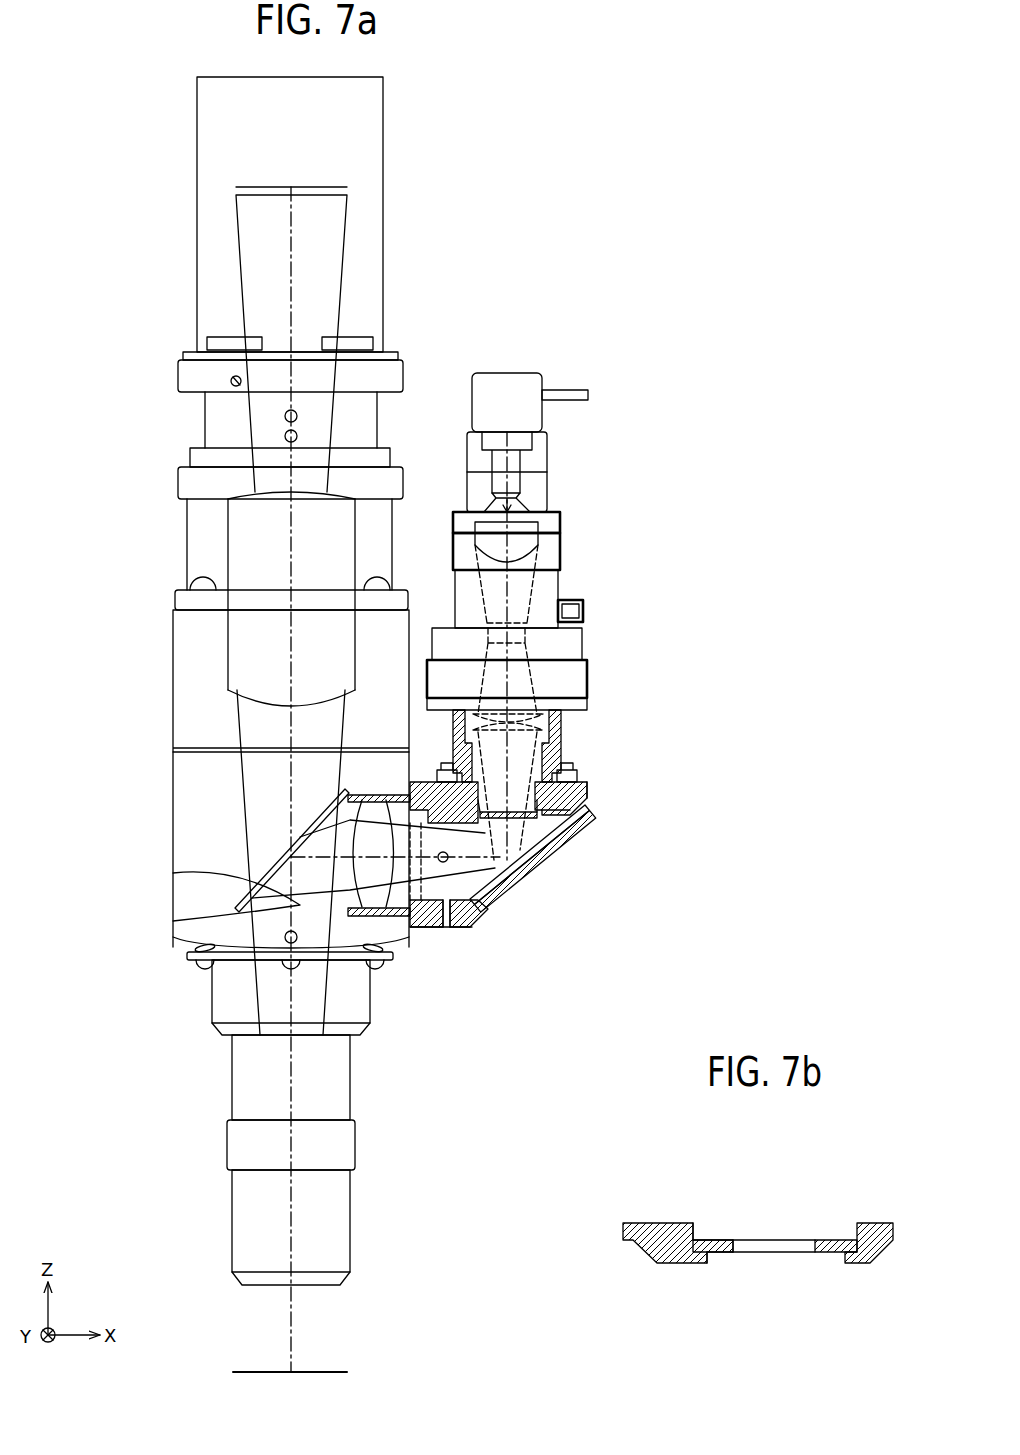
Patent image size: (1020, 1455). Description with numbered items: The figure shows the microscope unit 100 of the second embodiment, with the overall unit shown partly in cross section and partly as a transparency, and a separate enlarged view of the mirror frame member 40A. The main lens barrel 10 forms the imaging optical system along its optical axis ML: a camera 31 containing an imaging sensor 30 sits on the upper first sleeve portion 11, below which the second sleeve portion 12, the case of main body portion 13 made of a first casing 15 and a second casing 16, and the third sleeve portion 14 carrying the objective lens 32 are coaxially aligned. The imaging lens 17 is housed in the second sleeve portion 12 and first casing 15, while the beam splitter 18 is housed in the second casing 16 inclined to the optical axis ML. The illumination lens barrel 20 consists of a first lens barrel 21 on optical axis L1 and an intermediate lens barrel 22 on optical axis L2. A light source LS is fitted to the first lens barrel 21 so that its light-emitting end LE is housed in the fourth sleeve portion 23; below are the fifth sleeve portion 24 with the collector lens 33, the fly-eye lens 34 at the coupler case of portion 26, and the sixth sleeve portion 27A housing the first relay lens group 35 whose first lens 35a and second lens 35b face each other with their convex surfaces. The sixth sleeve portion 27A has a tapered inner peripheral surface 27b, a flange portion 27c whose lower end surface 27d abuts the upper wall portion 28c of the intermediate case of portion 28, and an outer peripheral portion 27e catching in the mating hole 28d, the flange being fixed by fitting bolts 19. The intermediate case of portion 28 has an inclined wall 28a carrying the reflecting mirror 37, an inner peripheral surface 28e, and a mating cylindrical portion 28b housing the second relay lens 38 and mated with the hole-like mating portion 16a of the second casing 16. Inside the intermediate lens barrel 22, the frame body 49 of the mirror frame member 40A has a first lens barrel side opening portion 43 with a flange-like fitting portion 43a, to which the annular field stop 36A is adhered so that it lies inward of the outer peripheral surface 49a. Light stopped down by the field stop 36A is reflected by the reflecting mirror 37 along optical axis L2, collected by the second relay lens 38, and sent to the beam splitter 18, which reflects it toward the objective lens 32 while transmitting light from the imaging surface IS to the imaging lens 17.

In FIG. 7a, the microscope unit 100 is at (530, 292).
In FIG. 7a, the main lens barrel 10 is at (106, 492).
In FIG. 7a, the first sleeve portion 11 is at (176, 425).
In FIG. 7a, the second sleeve portion 12 is at (172, 565).
In FIG. 7a, the case of main body portion 13 is at (72, 712).
In FIG. 7a, the third sleeve portion 14 is at (185, 1004).
In FIG. 7a, the first casing 15 is at (165, 703).
In FIG. 7a, the second casing 16 is at (165, 818).
In FIG. 7a, the mating portion 16a is at (172, 839).
In FIG. 7a, the imaging lens 17 is at (228, 629).
In FIG. 7a, the beam splitter 18 is at (350, 877).
In FIG. 7a, the fitting bolts 19 is at (563, 768).
In FIG. 7a, the illumination lens barrel 20 is at (672, 463).
In FIG. 7a, the first lens barrel 21 is at (603, 517).
In FIG. 7a, the intermediate lens barrel 22 is at (553, 857).
In FIG. 7a, the fourth sleeve portion 23 is at (553, 445).
In FIG. 7a, the fifth sleeve portion 24 is at (568, 560).
In FIG. 7a, the coupler case of portion 26 is at (590, 647).
In FIG. 7a, the sixth sleeve portion 27A is at (573, 745).
In FIG. 7a, the inner peripheral surface 27b is at (456, 745).
In FIG. 7a, the flange portion 27c is at (446, 778).
In FIG. 7a, the lower end surface 27d is at (348, 795).
In FIG. 7a, the outer peripheral portion 27e is at (587, 802).
In FIG. 7a, the intermediate case of portion 28 is at (500, 960).
In FIG. 7a, the inclined wall 28a is at (505, 915).
In FIG. 7a, the mating cylindrical portion 28b is at (367, 913).
In FIG. 7a, the upper wall portion 28c is at (588, 787).
In FIG. 7a, the mating hole 28d is at (492, 930).
In FIG. 7a, the inner peripheral surface 28e is at (556, 819).
In FIG. 7a, the imaging sensor 30 is at (236, 195).
In FIG. 7a, the camera 31 is at (197, 137).
In FIG. 7a, the objective lens 32 is at (218, 1227).
In FIG. 7a, the collector lens 33 is at (560, 545).
In FIG. 7a, the fly-eye lens 34 is at (548, 632).
In FIG. 7a, the first relay lens group 35 is at (655, 658).
In FIG. 7a, the first lens 35a is at (552, 725).
In FIG. 7a, the second lens 35b is at (548, 738).
In FIG. 7a, the field stop 36A is at (520, 848).
In FIG. 7b, the field stop 36A is at (714, 1240).
In FIG. 7a, the reflecting mirror 37 is at (525, 878).
In FIG. 7a, the second relay lens 38 is at (240, 908).
In FIG. 7a, the mirror frame member 40A is at (462, 930).
In FIG. 7b, the mirror frame member 40A is at (873, 1220).
In FIG. 7b, the first lens barrel side opening portion 43 is at (803, 1216).
In FIG. 7b, the fitting portion 43a is at (705, 1262).
In FIG. 7a, the frame body 49 is at (555, 826).
In FIG. 7b, the frame body 49 is at (640, 1223).
In FIG. 7b, the outer peripheral surface 49a is at (672, 1223).
In FIG. 7a, the light source LS is at (545, 385).
In FIG. 7a, the light-emitting end LE is at (525, 505).
In FIG. 7a, the optical axis L1 is at (520, 578).
In FIG. 7a, the optical axis L2 is at (412, 955).
In FIG. 7a, the optical axis ML is at (291, 541).
In FIG. 7a, the imaging surface IS is at (255, 1372).